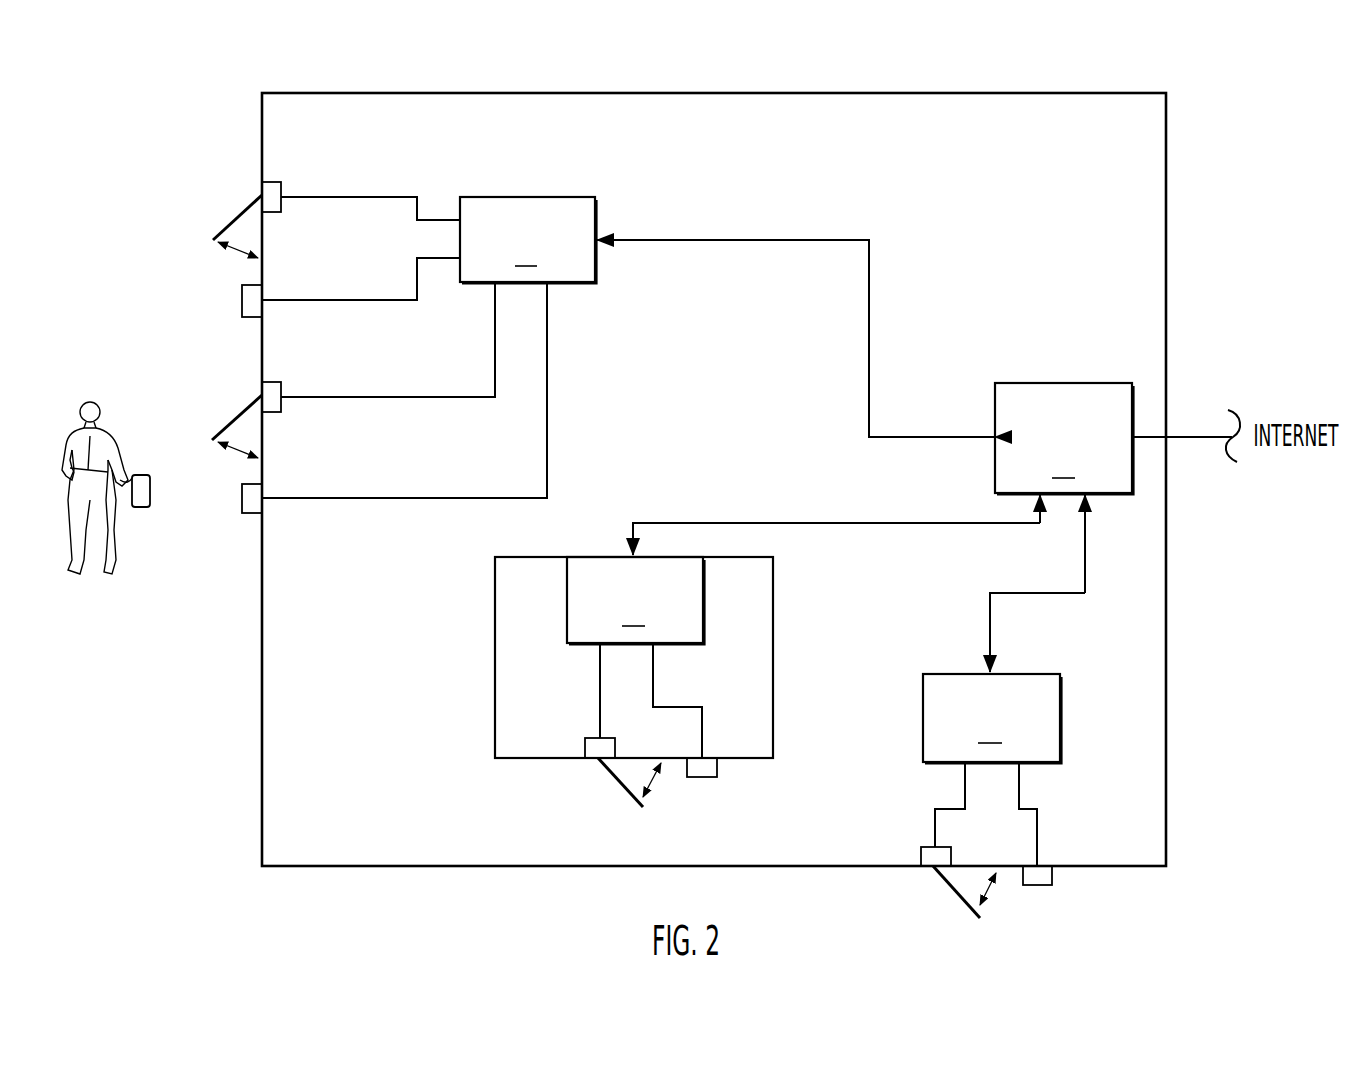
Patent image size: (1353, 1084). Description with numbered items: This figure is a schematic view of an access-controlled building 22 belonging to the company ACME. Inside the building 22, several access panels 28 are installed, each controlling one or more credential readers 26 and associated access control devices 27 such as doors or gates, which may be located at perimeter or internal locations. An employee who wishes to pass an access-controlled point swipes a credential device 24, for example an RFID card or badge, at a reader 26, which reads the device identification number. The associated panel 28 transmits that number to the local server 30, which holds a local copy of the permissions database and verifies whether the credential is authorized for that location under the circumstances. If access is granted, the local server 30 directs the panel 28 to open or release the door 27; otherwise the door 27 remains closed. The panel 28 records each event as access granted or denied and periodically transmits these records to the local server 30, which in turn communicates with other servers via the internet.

The building 22 is at (1192, 112).
The credential device 24 is at (155, 489).
The credential reader 26 is at (231, 301).
The access control device 27 is at (221, 216).
The access panel 28 is at (761, 480).
The local server 30 is at (1064, 439).